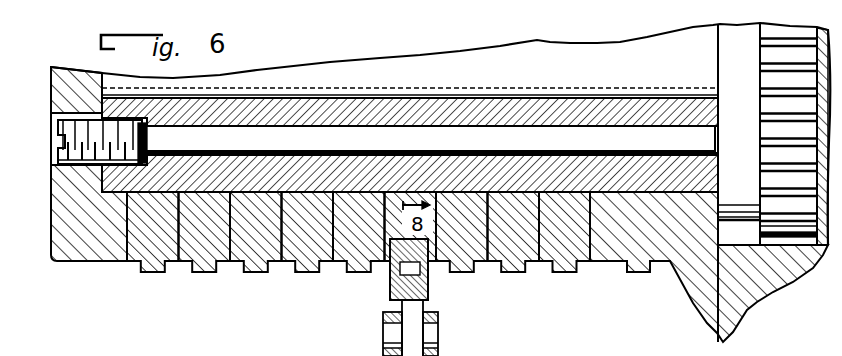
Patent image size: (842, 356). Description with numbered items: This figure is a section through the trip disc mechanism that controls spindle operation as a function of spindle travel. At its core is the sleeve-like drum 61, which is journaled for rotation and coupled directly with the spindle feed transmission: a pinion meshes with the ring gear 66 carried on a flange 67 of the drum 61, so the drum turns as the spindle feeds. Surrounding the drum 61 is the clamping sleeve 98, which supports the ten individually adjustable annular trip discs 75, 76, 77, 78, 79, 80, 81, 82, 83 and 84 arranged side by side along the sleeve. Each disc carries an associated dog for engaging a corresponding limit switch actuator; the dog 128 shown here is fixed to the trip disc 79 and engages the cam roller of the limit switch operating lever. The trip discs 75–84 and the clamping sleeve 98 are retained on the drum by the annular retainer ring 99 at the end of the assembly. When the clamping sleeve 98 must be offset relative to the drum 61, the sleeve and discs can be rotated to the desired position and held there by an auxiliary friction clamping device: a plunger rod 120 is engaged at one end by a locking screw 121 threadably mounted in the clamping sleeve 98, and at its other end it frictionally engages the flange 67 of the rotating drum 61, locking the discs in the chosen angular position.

The drum 61 is at (573, 50).
The plunger rod 120 is at (512, 132).
The clamping sleeve 98 is at (572, 110).
The locking screw 121 is at (96, 166).
The retainer ring 99 is at (100, 250).
The trip disc 84 is at (152, 273).
The trip disc 83 is at (204, 273).
The trip disc 82 is at (255, 273).
The trip disc 81 is at (307, 273).
The trip disc 80 is at (358, 273).
The trip disc 79 is at (388, 294).
The trip disc 78 is at (461, 273).
The trip disc 77 is at (512, 273).
The trip disc 76 is at (565, 273).
The trip disc 75 is at (639, 273).
The dog 128 is at (431, 296).
The flange 67 is at (742, 205).
The ring gear 66 is at (787, 222).